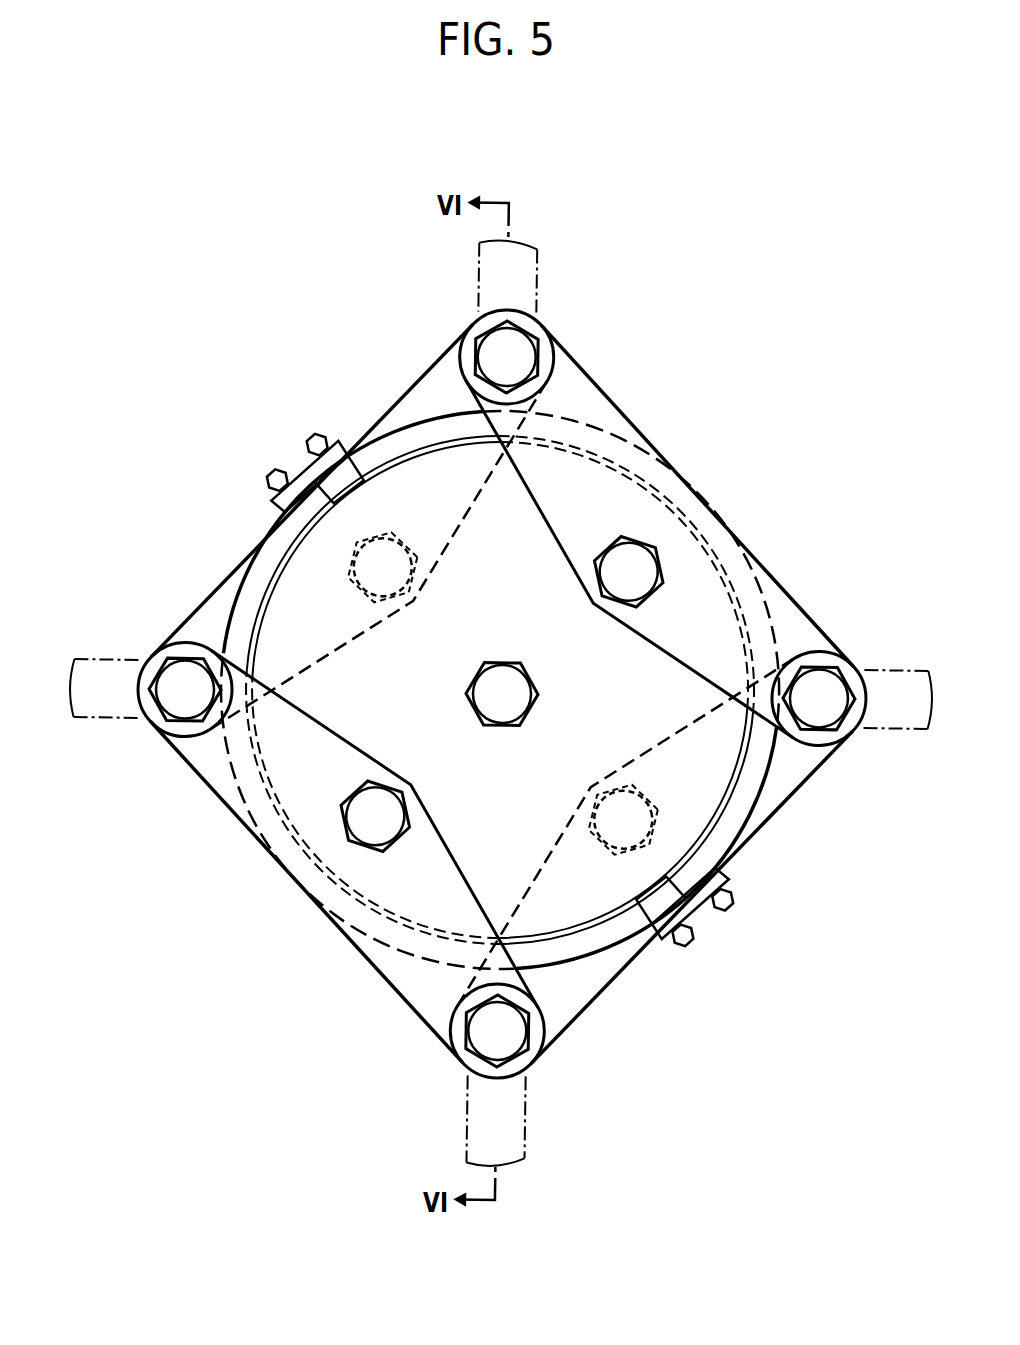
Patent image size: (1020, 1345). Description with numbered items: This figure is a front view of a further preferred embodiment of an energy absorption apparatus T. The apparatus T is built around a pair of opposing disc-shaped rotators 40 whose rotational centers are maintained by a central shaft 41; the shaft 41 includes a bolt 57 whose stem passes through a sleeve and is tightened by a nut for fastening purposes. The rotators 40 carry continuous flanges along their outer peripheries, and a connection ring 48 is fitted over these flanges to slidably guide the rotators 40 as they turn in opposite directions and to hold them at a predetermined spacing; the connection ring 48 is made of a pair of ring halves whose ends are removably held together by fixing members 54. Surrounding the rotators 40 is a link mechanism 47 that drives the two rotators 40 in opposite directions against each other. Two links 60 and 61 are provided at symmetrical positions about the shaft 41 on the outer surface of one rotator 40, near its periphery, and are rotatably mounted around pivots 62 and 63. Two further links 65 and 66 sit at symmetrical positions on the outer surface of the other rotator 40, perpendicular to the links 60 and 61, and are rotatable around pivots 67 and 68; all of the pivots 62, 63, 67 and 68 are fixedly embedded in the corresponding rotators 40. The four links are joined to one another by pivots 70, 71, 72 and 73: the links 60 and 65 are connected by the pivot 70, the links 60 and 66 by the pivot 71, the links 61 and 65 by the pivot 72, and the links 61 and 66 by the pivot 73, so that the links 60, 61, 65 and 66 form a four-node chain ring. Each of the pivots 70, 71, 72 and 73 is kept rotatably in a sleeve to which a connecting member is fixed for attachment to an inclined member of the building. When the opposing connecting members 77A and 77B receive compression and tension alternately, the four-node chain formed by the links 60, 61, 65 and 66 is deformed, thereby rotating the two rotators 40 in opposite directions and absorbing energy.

The rotator 40 is at (608, 676).
The shaft 41 is at (492, 659).
The link mechanism 47 is at (636, 413).
The connection ring 48 is at (257, 580).
The fixing member 54 is at (303, 478).
The bolt 57 is at (490, 680).
The link 60 is at (697, 577).
The link 61 is at (335, 875).
The pivot 62 is at (640, 580).
The pivot 63 is at (365, 798).
The link 65 is at (420, 397).
The link 66 is at (585, 995).
The pivot 67 is at (395, 558).
The pivot 68 is at (640, 823).
The pivot 70 is at (495, 342).
The pivot 71 is at (822, 710).
The pivot 72 is at (172, 700).
The pivot 73 is at (495, 1025).
The connecting member 77A is at (540, 273).
The connecting member 77B is at (120, 658).
The energy absorption apparatus T is at (792, 432).